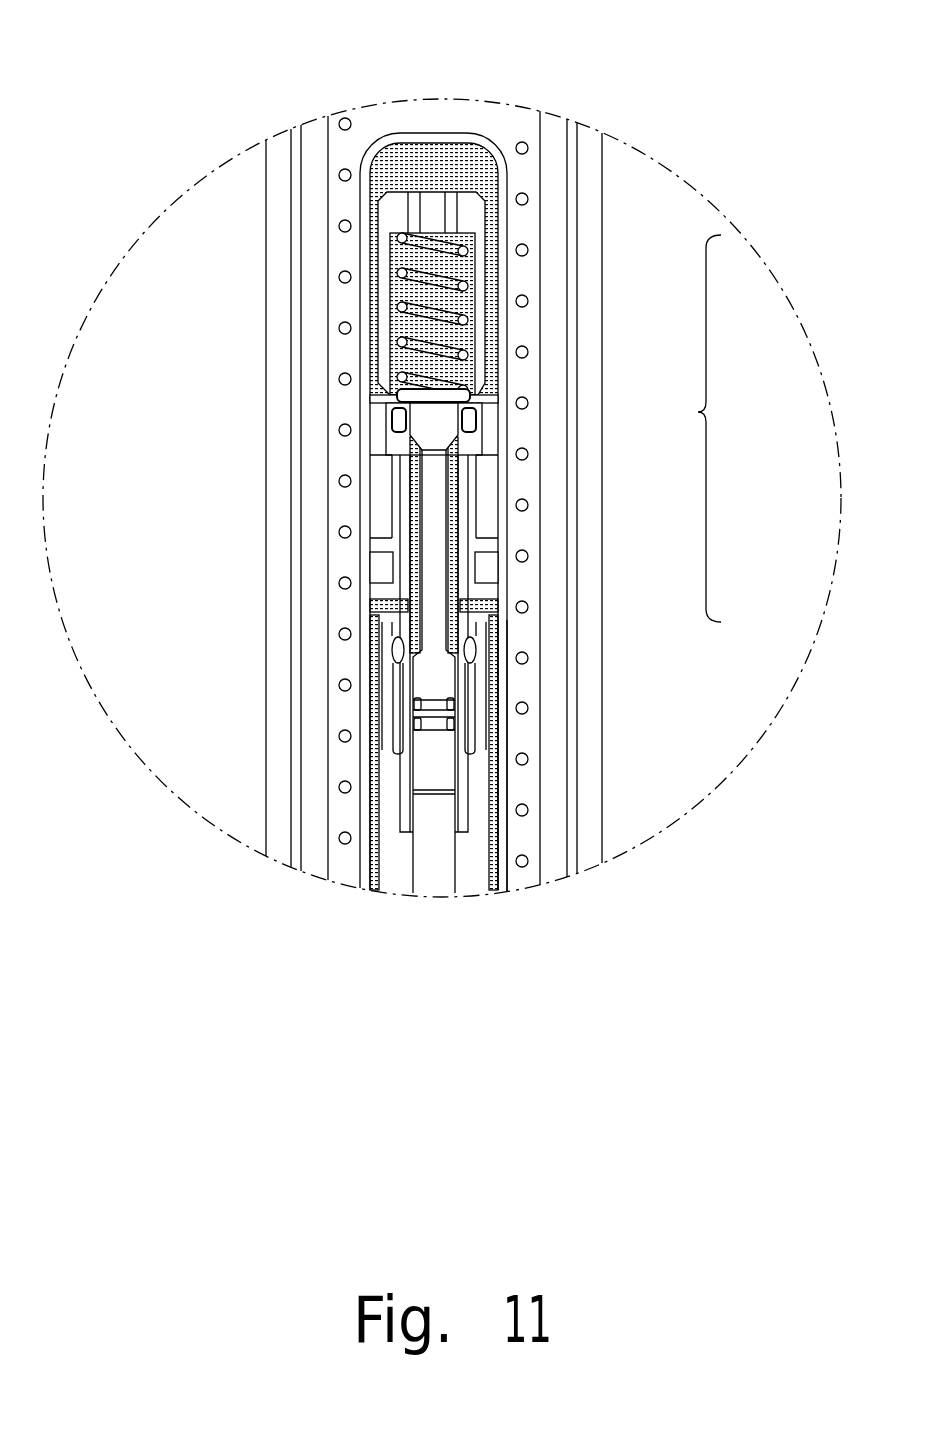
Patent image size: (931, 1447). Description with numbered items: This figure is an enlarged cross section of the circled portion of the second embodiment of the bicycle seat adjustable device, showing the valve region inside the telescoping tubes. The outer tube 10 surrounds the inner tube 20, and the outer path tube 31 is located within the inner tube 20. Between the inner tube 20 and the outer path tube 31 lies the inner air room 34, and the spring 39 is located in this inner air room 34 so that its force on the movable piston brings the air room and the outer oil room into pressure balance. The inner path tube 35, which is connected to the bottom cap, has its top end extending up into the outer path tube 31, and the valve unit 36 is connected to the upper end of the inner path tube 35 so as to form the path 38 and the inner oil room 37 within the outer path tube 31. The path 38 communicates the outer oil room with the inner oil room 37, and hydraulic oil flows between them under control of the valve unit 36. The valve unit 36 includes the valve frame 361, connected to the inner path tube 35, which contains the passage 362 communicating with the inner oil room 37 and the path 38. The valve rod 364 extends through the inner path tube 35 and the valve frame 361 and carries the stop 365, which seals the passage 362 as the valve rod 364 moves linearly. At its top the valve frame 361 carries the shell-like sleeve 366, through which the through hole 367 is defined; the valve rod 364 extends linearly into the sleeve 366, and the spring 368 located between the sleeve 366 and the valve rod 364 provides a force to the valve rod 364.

The outer tube 10 is at (280, 148).
The inner tube 20 is at (313, 138).
The spring 39 is at (338, 228).
The inner air room 34 is at (517, 127).
The inner oil room 37 is at (418, 153).
The shell-like sleeve 366 is at (477, 222).
The spring 368 is at (457, 287).
The through hole 367 is at (483, 389).
The stop 365 is at (468, 398).
The valve rod 364 is at (432, 511).
The valve frame 361 is at (467, 567).
The passage 362 is at (484, 608).
The valve unit 36 is at (728, 428).
The inner path tube 35 is at (473, 880).
The outer path tube 31 is at (502, 875).
The path 38 is at (492, 822).